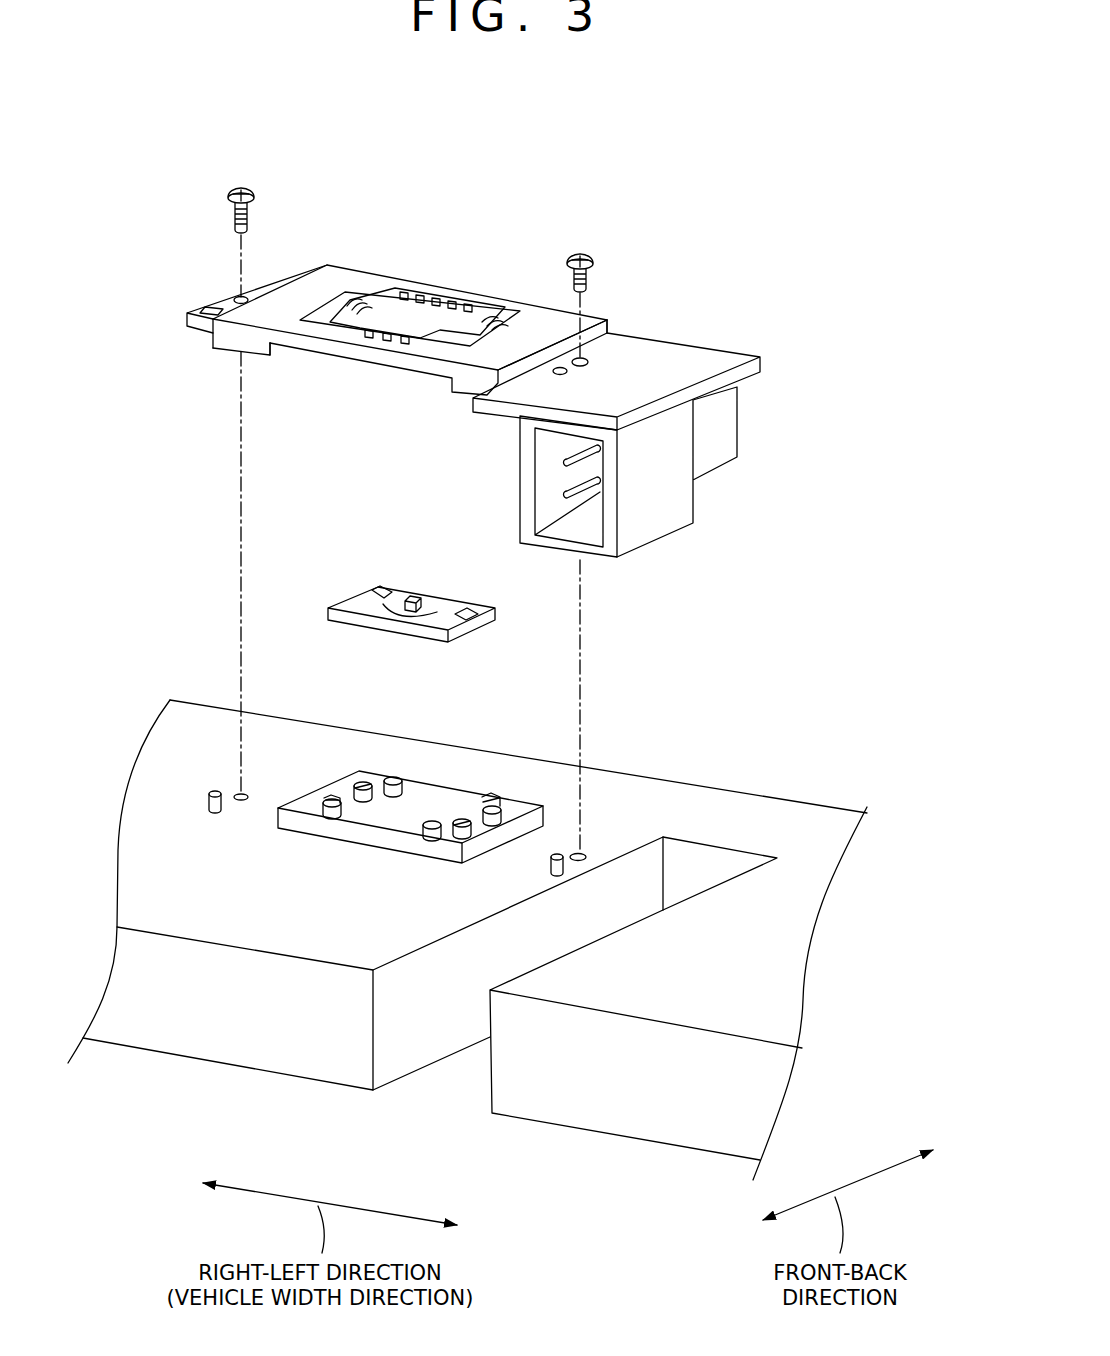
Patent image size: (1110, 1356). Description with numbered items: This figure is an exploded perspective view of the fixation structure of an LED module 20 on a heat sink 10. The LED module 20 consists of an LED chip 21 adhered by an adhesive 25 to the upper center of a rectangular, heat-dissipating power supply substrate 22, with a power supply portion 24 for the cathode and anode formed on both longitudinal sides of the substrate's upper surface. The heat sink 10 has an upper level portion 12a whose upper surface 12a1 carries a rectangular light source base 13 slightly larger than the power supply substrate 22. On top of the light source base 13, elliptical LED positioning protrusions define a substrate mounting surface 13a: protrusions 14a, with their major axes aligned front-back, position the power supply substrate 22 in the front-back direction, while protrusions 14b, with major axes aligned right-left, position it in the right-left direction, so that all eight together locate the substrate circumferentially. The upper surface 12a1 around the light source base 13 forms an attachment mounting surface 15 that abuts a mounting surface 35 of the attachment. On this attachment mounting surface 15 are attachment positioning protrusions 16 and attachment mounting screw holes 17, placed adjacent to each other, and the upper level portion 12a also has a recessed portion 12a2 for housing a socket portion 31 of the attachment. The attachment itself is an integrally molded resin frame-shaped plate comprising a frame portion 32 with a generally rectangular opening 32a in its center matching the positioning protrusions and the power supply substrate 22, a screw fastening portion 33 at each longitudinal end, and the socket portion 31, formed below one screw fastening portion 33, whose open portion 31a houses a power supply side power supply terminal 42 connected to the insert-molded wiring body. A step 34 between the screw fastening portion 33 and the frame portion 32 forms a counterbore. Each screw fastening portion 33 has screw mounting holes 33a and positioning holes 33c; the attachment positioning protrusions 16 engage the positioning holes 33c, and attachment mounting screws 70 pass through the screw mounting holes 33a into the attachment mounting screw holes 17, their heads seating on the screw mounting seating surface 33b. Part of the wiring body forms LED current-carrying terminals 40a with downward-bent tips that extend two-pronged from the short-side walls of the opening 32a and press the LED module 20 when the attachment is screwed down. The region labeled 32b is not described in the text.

The heat sink 10 is at (467, 971).
The upper level portion 12a is at (467, 971).
The upper surface 12a1 is at (515, 870).
The recessed portion 12a2 is at (432, 1042).
The light source base 13 is at (352, 792).
The substrate mounting surface 13a is at (415, 806).
The protrusions 14a is at (392, 777).
The protrusions 14b is at (362, 782).
The attachment mounting surface 15 is at (626, 1006).
The attachment positioning protrusions 16 is at (216, 790).
The attachment mounting screw holes 17 is at (243, 793).
The LED module 20 is at (403, 574).
The LED chip 21 is at (415, 596).
The power supply substrate 22 is at (328, 614).
The power supply portion 24 is at (370, 590).
The adhesive 25 is at (440, 610).
The socket portion 31 is at (632, 504).
The open portion 31a is at (585, 525).
The frame portion 32 is at (410, 312).
The opening 32a is at (410, 320).
The plate surface 32b is at (537, 313).
The screw fastening portion 33 is at (484, 317).
The screw mounting holes 33a is at (233, 297).
The screw mounting seating surface 33b is at (266, 283).
The positioning holes 33c is at (198, 320).
The step 34 is at (316, 263).
The mounting surface 35 is at (419, 327).
The LED current-carrying terminals 40a is at (366, 300).
The power supply side power supply terminal 42 is at (557, 463).
The attachment mounting screws 70 is at (246, 187).